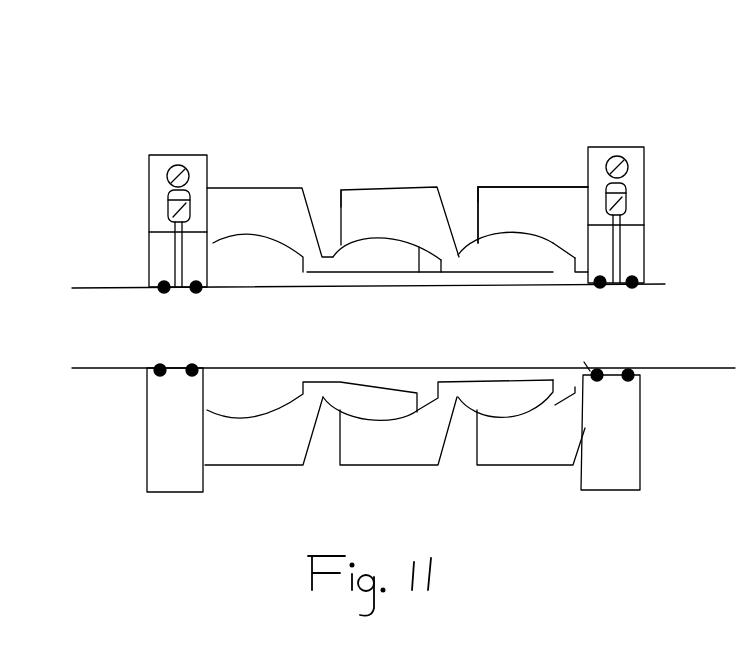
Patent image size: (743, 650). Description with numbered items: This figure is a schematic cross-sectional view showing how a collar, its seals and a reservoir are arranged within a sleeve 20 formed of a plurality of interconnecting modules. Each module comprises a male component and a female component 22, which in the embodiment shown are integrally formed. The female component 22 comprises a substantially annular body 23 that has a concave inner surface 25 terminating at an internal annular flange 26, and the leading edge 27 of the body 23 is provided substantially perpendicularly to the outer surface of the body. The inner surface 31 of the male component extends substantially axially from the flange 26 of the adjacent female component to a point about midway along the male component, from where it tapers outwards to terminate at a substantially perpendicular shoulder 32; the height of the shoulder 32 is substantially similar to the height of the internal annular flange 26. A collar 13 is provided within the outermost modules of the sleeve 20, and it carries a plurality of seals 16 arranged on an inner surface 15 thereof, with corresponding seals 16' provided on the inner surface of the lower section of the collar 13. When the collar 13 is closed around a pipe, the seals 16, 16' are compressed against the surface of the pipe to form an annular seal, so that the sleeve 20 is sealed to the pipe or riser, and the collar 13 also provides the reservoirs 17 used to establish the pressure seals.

The collar 13 is at (171, 145).
The inner surface 15 is at (132, 288).
The seals 16 is at (436, 267).
The seals 16' is at (655, 389).
The reservoirs 17 is at (630, 194).
The sleeve 20 is at (374, 129).
The female component 22 is at (500, 187).
The annular body 23 is at (536, 205).
The concave inner surface 25 is at (558, 252).
The internal annular flange 26 is at (441, 272).
The leading edge 27 is at (340, 207).
The inner surface of the male component 31 is at (341, 272).
The shoulder 32 is at (419, 272).